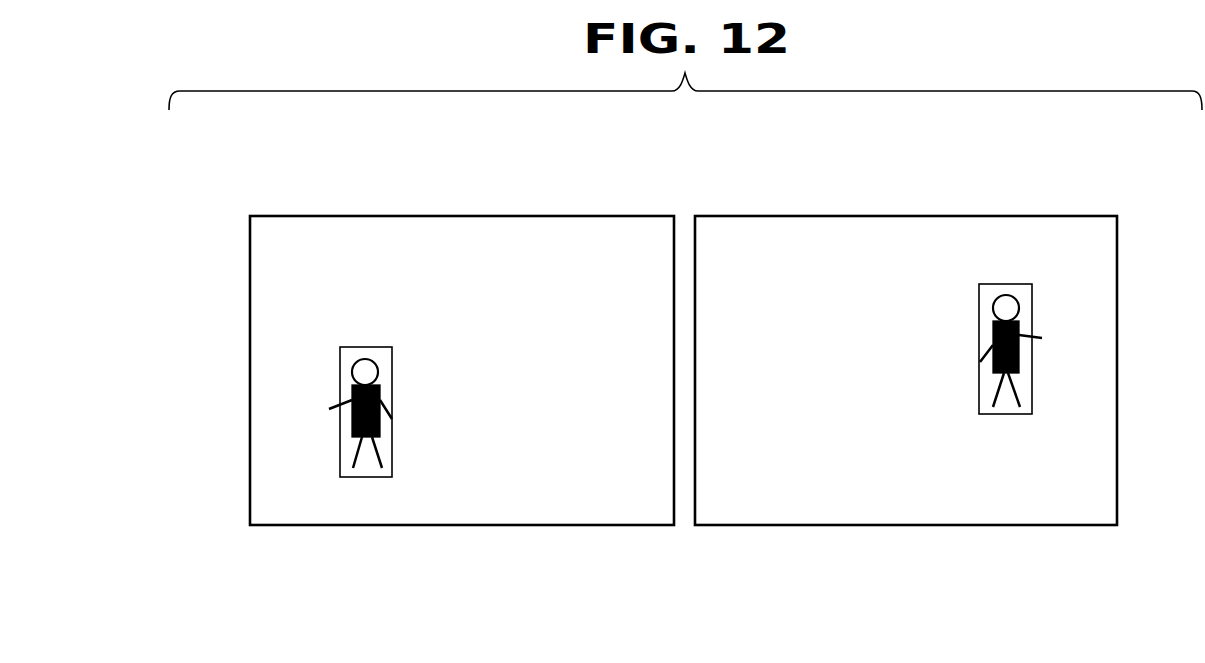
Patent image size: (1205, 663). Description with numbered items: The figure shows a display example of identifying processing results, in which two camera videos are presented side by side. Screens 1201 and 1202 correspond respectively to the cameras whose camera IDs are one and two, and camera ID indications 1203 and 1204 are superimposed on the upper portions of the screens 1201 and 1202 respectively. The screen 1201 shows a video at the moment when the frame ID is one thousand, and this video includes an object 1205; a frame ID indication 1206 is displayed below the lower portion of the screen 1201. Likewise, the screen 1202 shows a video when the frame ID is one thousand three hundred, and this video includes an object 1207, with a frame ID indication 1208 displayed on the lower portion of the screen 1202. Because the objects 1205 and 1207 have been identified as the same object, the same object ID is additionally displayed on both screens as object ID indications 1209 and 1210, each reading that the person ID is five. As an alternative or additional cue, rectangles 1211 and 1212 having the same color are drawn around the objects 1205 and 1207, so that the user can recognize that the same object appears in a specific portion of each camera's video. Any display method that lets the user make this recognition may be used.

The screen 1201 is at (288, 215).
The screen 1202 is at (724, 215).
The camera ID indication 1203 is at (582, 232).
The camera ID indication 1204 is at (1020, 232).
The object 1205 is at (352, 430).
The frame ID indication 1206 is at (545, 570).
The object 1207 is at (1019, 362).
The frame ID indication 1208 is at (988, 570).
The object ID indication 1209 is at (302, 490).
The object ID indication 1210 is at (1070, 443).
The rectangle 1211 is at (340, 358).
The rectangle 1212 is at (1032, 295).